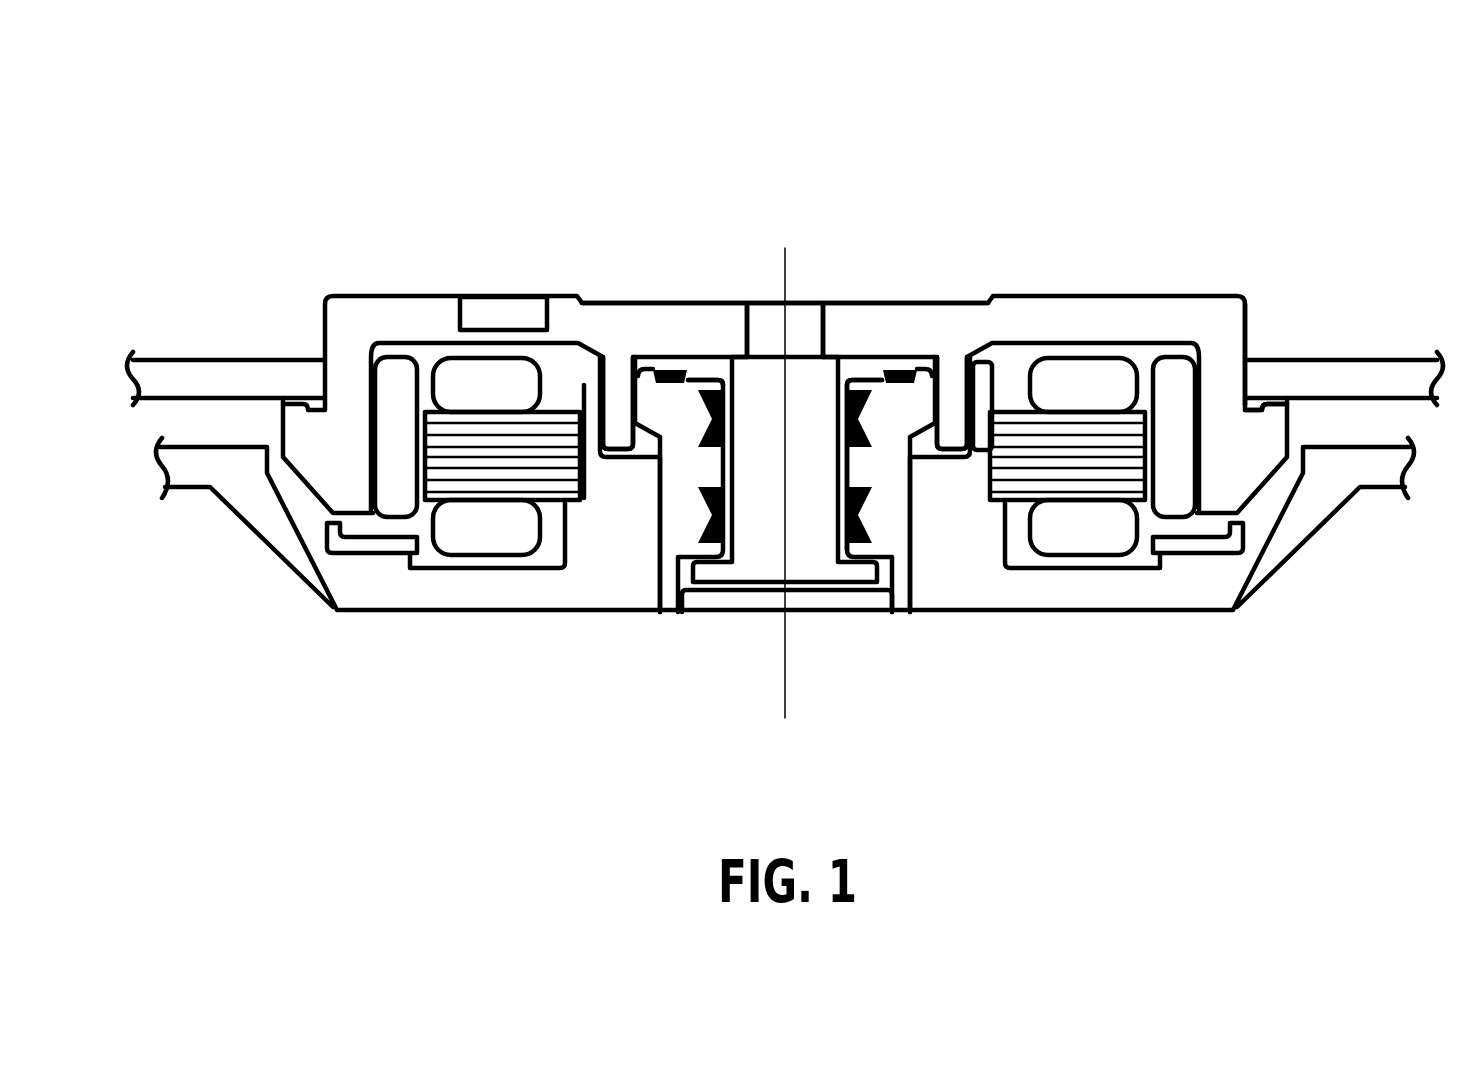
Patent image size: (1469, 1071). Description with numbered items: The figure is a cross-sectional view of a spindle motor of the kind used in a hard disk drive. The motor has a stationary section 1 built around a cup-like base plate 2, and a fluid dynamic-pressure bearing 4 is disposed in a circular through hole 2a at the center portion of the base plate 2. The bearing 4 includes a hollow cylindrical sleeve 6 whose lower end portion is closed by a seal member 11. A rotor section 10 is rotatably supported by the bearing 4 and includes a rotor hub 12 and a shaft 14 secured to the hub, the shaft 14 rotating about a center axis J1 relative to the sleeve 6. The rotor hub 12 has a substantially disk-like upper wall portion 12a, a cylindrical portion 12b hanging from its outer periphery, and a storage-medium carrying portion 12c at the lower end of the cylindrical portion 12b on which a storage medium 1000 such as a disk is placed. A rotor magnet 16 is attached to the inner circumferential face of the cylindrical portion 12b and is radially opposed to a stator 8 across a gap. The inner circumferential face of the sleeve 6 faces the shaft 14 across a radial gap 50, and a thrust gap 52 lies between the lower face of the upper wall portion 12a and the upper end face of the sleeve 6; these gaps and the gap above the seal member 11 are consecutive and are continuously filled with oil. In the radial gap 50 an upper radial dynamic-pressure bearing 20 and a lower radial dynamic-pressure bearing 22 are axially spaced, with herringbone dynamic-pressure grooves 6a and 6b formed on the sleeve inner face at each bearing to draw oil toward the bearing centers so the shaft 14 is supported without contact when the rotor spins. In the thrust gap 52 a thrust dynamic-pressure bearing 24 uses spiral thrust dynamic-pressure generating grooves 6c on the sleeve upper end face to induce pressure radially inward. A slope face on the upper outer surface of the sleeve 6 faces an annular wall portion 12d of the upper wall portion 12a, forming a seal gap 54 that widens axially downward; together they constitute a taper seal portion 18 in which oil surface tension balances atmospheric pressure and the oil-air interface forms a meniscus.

The stationary section 1 is at (390, 643).
The base plate 2 is at (268, 515).
The circular through hole 2a is at (660, 527).
The fluid dynamic-pressure bearing 4 is at (823, 698).
The sleeve 6 is at (887, 540).
The herringbone dynamic-pressure grooves 6a is at (708, 430).
The herringbone dynamic-pressure grooves 6b is at (708, 497).
The thrust dynamic-pressure generating grooves 6c is at (715, 357).
The stator 8 is at (1085, 470).
The rotor section 10 is at (1103, 204).
The seal member 11 is at (827, 605).
The rotor hub 12 is at (1125, 327).
The upper wall portion 12a is at (892, 333).
The cylindrical portion 12b is at (1223, 370).
The storage-medium carrying portion 12c is at (1273, 418).
The annular wall portion 12d is at (618, 407).
The shaft 14 is at (803, 340).
The rotor magnet 16 is at (393, 457).
The taper seal portion 18 is at (637, 398).
The upper radial dynamic-pressure bearing 20 is at (842, 415).
The lower radial dynamic-pressure bearing 22 is at (843, 497).
The thrust dynamic-pressure bearing 24 is at (662, 365).
The radial gap 50 is at (838, 460).
The thrust gap 52 is at (868, 368).
The seal gap 54 is at (950, 419).
The storage medium 1000 is at (275, 385).
The center axis J1 is at (783, 513).